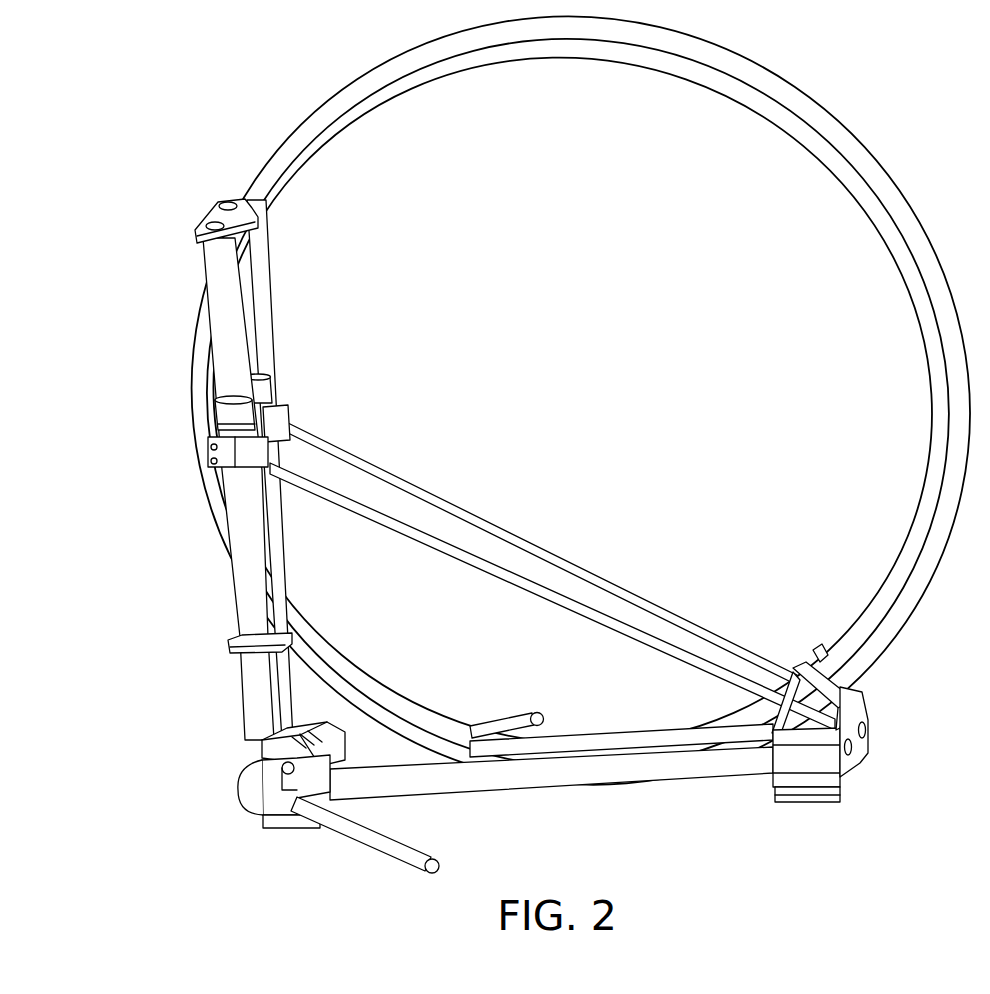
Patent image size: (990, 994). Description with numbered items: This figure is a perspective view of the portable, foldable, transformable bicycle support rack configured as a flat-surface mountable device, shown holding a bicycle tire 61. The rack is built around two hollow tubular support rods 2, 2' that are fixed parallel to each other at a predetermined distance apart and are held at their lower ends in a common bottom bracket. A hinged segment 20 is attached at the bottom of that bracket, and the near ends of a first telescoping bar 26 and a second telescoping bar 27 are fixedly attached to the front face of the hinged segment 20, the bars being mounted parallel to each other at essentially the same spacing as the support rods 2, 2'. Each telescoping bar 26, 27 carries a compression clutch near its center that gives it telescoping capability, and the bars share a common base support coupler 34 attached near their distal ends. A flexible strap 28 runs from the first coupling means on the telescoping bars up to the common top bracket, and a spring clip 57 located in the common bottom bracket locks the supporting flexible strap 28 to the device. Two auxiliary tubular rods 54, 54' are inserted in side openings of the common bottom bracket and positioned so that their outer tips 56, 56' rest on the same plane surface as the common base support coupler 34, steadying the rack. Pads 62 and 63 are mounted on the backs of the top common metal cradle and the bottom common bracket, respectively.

The bicycle tire 61 is at (833, 113).
The first telescoping bar 26 is at (252, 360).
The second telescoping bar 27 is at (228, 323).
The flexible strap 28 is at (386, 492).
The spring clip 57 is at (278, 738).
The hollow tubular support rod 2 is at (551, 816).
The hollow tubular support rod 2' is at (621, 701).
The tubular rod 54 is at (361, 858).
The tubular rod 54' is at (474, 688).
The outer tip 56 is at (484, 852).
The outer tip 56' is at (536, 670).
The hinged segment 20 is at (300, 790).
The pad 62 is at (283, 830).
The pad 63 is at (783, 802).
The common base support coupler 34 is at (820, 795).